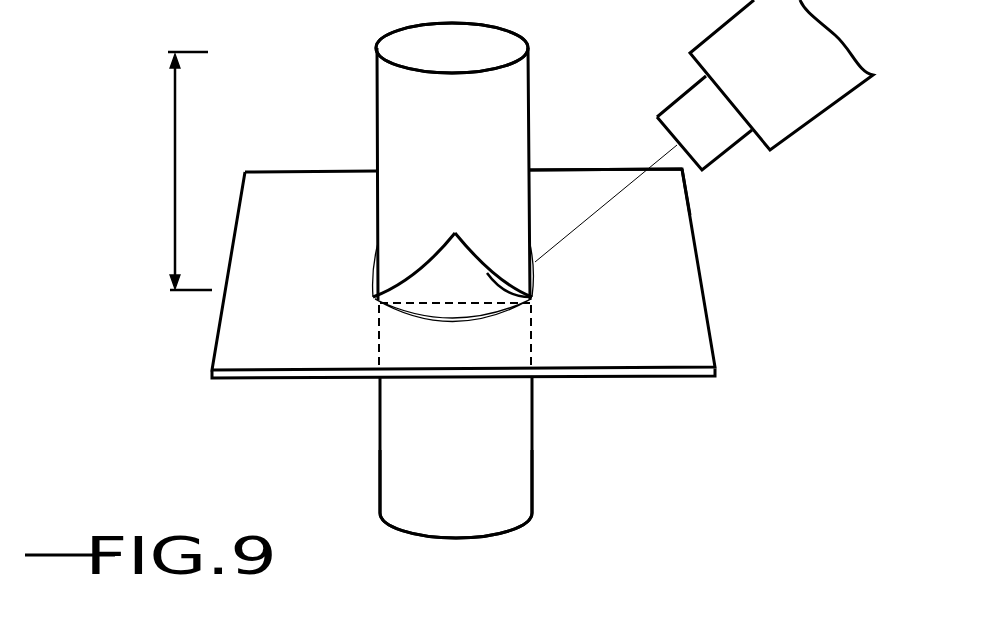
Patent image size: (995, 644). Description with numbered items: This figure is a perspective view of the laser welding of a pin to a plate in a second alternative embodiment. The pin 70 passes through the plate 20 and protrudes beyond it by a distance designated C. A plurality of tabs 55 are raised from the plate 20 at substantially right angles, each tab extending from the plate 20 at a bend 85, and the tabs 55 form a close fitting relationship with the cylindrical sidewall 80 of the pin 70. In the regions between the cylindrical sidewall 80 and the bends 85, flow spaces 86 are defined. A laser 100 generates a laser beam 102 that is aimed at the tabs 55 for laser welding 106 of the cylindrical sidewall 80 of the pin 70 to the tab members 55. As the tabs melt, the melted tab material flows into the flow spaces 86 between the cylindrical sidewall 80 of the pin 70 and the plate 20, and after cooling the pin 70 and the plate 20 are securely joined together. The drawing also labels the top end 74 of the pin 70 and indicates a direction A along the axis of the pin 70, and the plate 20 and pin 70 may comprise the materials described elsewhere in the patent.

The plate 20 is at (670, 347).
The tabs 55 is at (537, 302).
The pin 70 is at (508, 418).
The top end of rod 74 is at (500, 48).
The cylindrical sidewall 80 is at (512, 468).
The bend 85 is at (472, 305).
The flow spaces 86 is at (372, 277).
The laser 100 is at (765, 85).
The laser beam 102 is at (620, 193).
The laser welding 106 is at (635, 138).
The distance C is at (173, 200).
The direction A is at (458, 563).